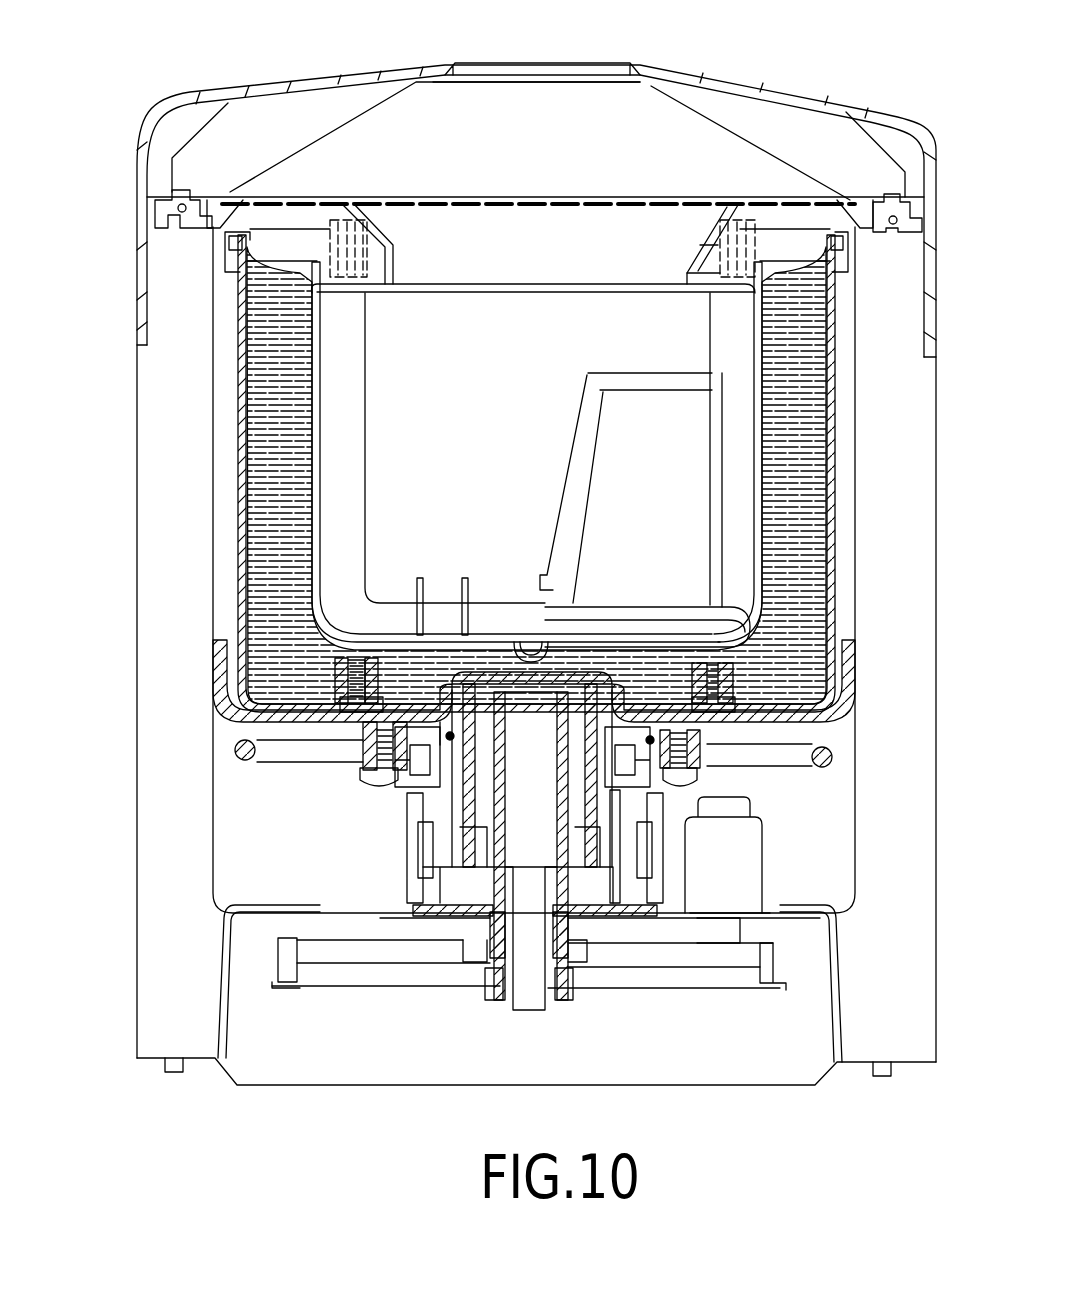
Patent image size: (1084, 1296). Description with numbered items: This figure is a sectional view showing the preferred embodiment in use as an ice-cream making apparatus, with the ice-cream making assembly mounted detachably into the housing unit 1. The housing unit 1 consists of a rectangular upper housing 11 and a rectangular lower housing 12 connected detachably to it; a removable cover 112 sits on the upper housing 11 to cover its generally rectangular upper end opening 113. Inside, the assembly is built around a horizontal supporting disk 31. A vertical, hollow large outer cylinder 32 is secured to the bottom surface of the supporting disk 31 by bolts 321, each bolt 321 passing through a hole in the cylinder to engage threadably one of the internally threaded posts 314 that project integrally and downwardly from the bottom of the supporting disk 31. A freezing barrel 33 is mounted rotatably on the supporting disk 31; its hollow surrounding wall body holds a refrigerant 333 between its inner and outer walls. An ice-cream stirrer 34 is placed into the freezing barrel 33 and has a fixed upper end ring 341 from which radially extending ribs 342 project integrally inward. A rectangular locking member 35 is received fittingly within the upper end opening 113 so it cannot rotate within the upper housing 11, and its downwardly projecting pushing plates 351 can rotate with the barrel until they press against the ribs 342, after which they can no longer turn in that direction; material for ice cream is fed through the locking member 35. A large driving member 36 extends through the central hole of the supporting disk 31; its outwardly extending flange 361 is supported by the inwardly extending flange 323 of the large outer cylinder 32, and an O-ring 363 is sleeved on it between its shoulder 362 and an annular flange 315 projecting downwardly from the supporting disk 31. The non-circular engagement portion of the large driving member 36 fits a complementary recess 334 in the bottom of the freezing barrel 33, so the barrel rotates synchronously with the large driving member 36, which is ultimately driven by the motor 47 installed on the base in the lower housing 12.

The housing unit 1 is at (937, 165).
The upper housing 11 is at (937, 290).
The lower housing 12 is at (937, 457).
The removable cover 112 is at (658, 66).
The upper end opening 113 is at (860, 237).
The supporting disk 31 is at (848, 718).
The large outer cylinder 32 is at (403, 880).
The freezing barrel 33 is at (838, 355).
The ice-cream stirrer 34 is at (315, 372).
The locking member 35 is at (370, 222).
The large driving member 36 is at (582, 850).
The motor 47 is at (727, 898).
The internally threaded posts 314 is at (360, 723).
The annular flange 315 is at (652, 745).
The bolts 321 is at (682, 825).
The inwardly extending flange 323 is at (418, 783).
The refrigerant 333 is at (815, 432).
The recess 334 is at (522, 640).
The upper end ring 341 is at (773, 253).
The radially extending ribs 342 is at (687, 255).
The pushing plates 351 is at (700, 250).
The outwardly extending flange 361 is at (418, 748).
The shoulder 362 is at (450, 740).
The O-ring 363 is at (450, 733).